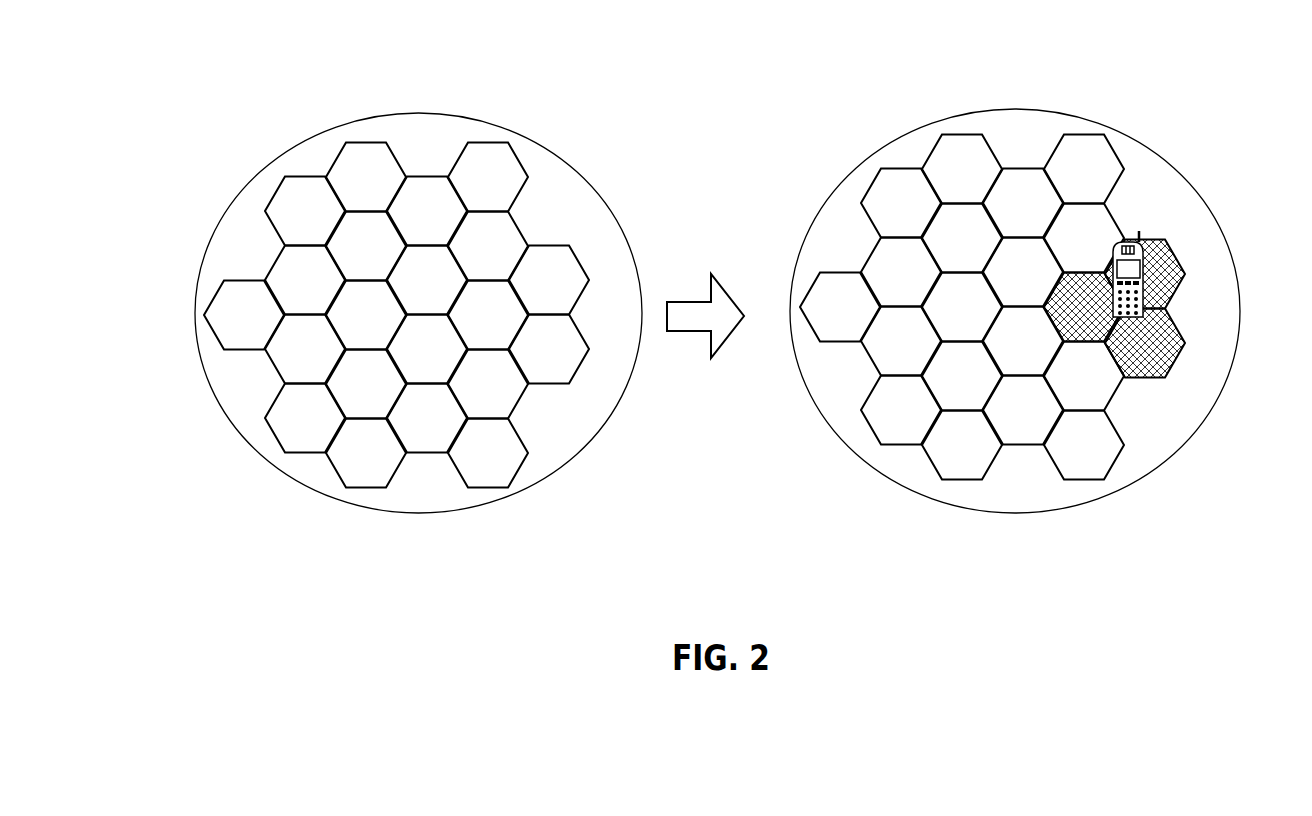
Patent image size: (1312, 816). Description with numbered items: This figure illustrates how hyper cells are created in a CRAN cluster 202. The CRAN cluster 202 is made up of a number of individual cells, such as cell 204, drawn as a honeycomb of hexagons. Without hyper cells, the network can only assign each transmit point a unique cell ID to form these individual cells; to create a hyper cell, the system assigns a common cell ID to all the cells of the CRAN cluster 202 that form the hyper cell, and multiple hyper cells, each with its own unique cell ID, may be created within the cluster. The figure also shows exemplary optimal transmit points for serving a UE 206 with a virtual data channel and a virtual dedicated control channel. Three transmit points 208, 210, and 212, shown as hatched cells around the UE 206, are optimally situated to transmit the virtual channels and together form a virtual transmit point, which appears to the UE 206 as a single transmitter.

The CRAN cluster 202 is at (473, 119).
The cell 204 is at (355, 147).
The UE 206 is at (1122, 320).
The transmit point 208 is at (1155, 265).
The transmit point 210 is at (1163, 347).
The transmit point 212 is at (1082, 307).